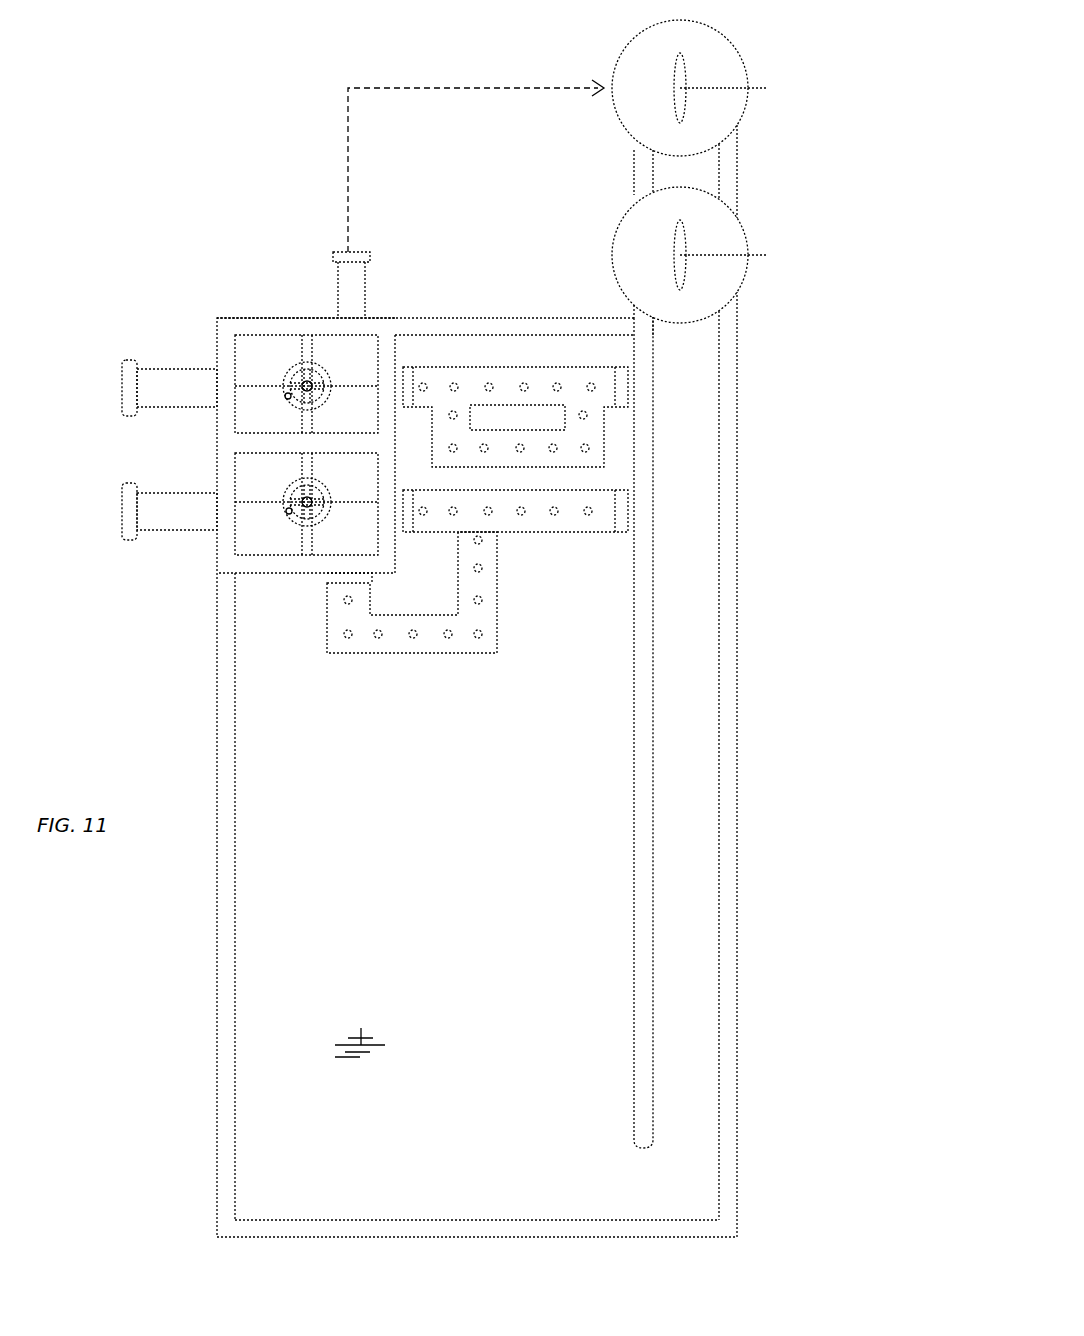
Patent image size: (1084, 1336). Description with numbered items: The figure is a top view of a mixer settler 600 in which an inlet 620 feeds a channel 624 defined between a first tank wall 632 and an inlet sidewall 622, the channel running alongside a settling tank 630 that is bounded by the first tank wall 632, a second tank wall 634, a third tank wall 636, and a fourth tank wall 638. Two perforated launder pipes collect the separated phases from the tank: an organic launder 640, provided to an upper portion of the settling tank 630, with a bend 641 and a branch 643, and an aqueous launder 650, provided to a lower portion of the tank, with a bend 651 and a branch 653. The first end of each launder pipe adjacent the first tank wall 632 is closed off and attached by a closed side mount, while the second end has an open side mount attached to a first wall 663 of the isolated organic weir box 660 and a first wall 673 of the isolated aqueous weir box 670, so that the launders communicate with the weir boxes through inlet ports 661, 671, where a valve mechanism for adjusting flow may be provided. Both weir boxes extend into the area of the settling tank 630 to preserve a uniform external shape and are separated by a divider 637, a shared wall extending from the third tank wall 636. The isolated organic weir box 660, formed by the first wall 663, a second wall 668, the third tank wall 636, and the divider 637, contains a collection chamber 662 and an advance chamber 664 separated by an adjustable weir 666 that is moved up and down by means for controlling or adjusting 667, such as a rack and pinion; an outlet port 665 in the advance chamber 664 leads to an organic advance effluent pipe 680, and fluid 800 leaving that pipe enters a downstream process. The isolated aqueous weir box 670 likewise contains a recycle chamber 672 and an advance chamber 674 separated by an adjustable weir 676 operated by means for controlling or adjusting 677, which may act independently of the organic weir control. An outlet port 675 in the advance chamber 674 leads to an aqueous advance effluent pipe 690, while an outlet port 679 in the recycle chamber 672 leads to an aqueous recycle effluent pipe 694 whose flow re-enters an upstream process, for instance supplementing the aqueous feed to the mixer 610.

The mixer settler 600 is at (258, 162).
The mixer 610 is at (608, 55).
The inlet 620 is at (692, 337).
The inlet sidewall 622 is at (722, 537).
The channel 624 is at (693, 690).
The settling tank 630 is at (460, 818).
The first tank wall 632 is at (650, 777).
The second tank wall 634 is at (447, 1238).
The third tank wall 636 is at (232, 735).
The divider 637 is at (352, 425).
The fourth tank wall 638 is at (468, 318).
The organic launder 640 is at (505, 575).
The bend 641 is at (493, 650).
The branch 643 is at (498, 530).
The aqueous launder 650 is at (530, 360).
The bend 651 is at (594, 456).
The branch 653 is at (604, 407).
The isolated organic weir box 660 is at (243, 558).
The inlet port 661 is at (370, 500).
The collection chamber 662 is at (366, 478).
The first wall 663 is at (383, 543).
The advance chamber 664 is at (292, 478).
The outlet port 665 is at (250, 503).
The adjustable weir 666 is at (312, 540).
The means for controlling or adjusting 667 is at (290, 513).
The second wall 668 is at (273, 573).
The isolated aqueous weir box 670 is at (235, 330).
The inlet port 671 is at (372, 388).
The recycle chamber 672 is at (349, 361).
The first wall 673 is at (381, 405).
The advance chamber 674 is at (283, 360).
The outlet port 675 is at (250, 395).
The adjustable weir 676 is at (312, 424).
The means for controlling or adjusting 677 is at (288, 398).
The outlet port 679 is at (356, 348).
The organic advance effluent pipe 680 is at (158, 528).
The aqueous advance effluent pipe 690 is at (165, 369).
The aqueous recycle effluent pipe 694 is at (360, 283).
The fluid 800 is at (361, 1034).